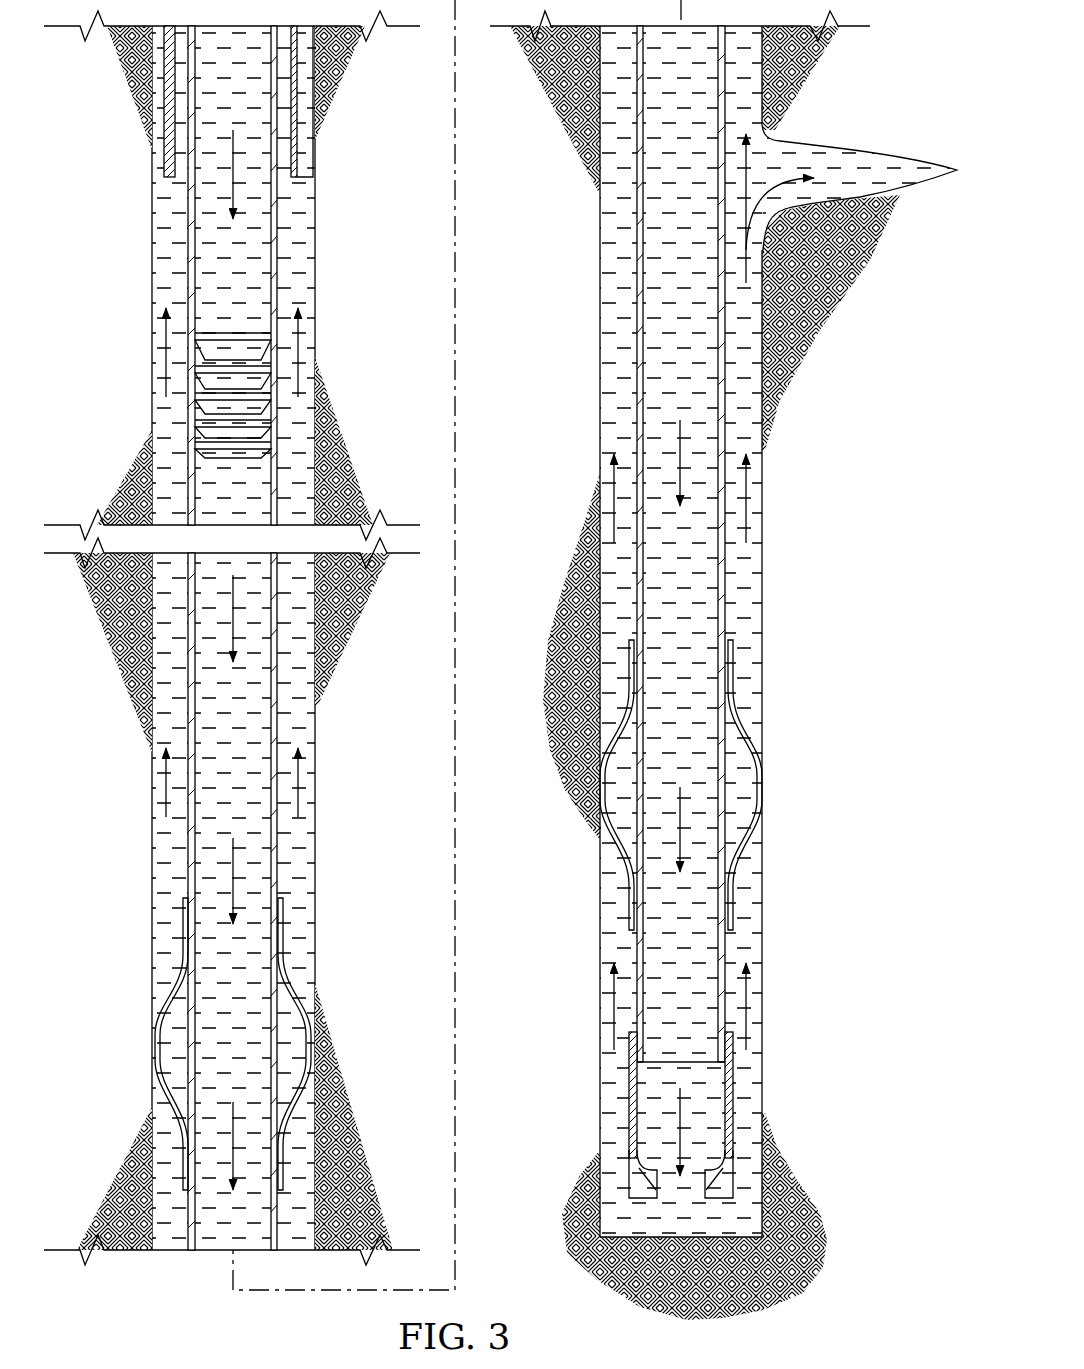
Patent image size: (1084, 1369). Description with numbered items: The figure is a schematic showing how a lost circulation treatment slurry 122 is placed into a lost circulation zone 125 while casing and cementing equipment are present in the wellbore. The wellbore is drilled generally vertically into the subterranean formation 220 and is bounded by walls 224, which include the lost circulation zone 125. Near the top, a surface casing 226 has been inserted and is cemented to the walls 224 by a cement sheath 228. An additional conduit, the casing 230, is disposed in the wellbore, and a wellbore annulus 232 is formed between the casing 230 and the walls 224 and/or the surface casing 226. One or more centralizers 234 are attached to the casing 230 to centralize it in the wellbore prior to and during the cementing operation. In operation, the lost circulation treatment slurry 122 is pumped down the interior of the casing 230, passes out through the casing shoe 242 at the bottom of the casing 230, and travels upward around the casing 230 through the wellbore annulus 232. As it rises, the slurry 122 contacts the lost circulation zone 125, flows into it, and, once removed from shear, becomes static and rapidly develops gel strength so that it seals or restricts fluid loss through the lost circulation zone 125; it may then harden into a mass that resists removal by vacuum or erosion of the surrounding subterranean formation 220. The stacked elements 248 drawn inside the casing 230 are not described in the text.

The lost circulation treatment slurry 122 is at (217, 181).
The lost circulation zone 125 is at (893, 155).
The subterranean formation 220 is at (797, 378).
The walls 224 is at (309, 252).
The surface casing 226 is at (307, 143).
The cement sheath 228 is at (158, 147).
The casing 230 is at (187, 707).
The wellbore annulus 232 is at (163, 918).
The centralizers 234 is at (747, 727).
The casing shoe 242 is at (732, 1068).
The packer elements 248 is at (205, 412).